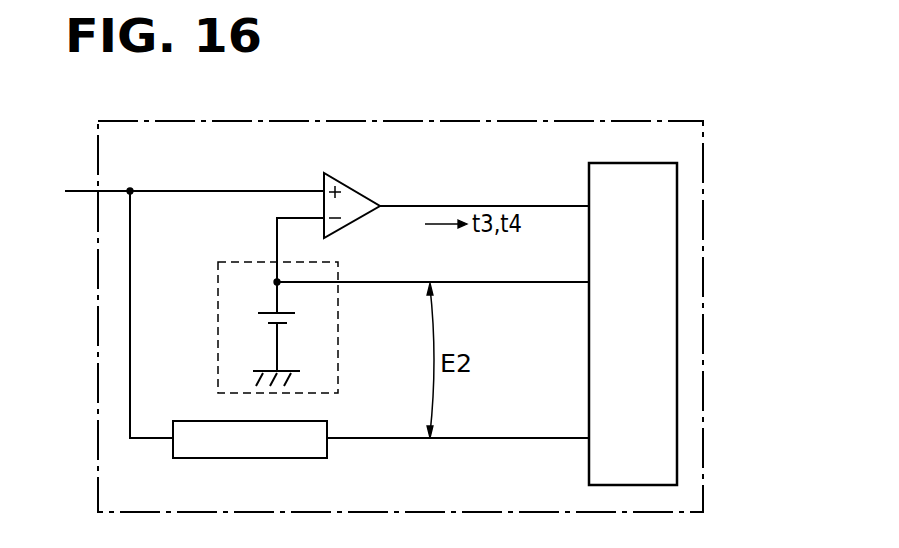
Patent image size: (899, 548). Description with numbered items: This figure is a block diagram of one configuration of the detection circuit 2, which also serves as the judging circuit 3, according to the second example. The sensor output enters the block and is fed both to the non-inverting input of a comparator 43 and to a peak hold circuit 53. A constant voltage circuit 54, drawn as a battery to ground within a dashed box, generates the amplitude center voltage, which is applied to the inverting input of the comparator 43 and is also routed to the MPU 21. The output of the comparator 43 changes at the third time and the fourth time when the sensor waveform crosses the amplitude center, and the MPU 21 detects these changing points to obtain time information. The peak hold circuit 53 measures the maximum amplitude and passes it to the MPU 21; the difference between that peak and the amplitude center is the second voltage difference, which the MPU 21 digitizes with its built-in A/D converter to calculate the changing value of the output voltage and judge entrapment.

The detection circuit 2 is at (439, 313).
The judging circuit 3 is at (703, 183).
The MPU 21 is at (589, 177).
The comparator 43 is at (350, 223).
The constant voltage circuit 54 is at (218, 277).
The peak hold circuit 53 is at (192, 421).